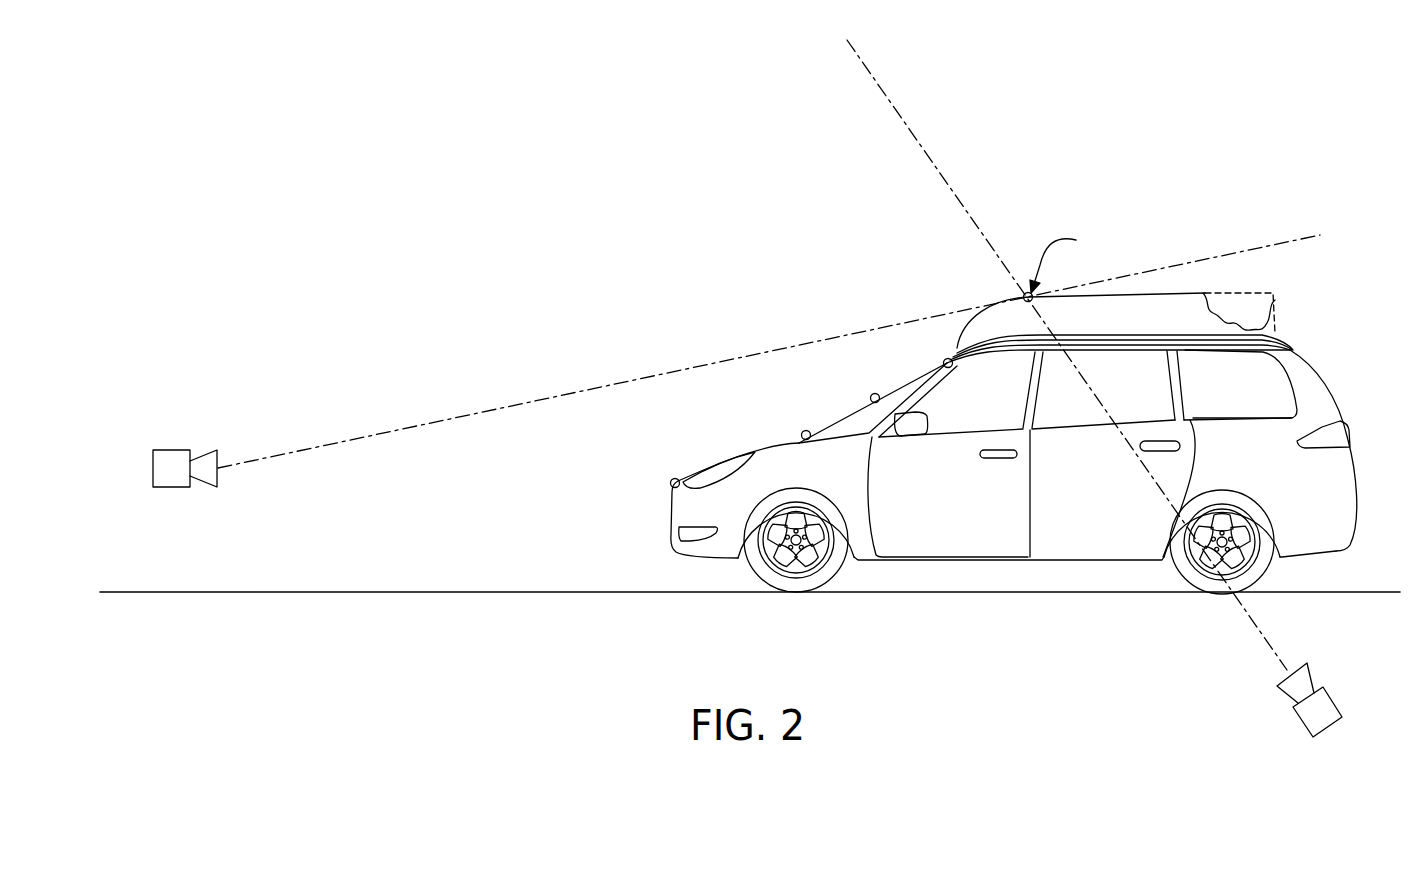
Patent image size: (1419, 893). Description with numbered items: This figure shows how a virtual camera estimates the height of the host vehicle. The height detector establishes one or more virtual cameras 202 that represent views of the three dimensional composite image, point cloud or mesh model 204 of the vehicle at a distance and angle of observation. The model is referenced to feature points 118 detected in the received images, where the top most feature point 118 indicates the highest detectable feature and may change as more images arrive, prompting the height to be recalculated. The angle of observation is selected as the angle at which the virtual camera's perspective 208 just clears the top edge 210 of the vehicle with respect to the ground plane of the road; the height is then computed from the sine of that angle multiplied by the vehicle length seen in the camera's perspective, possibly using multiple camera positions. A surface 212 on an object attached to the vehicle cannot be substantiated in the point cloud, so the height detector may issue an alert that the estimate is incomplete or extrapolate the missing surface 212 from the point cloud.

The feature points 118 is at (670, 484).
The virtual cameras 202 is at (172, 450).
The three dimensional composite image/point cloud/mesh model 204 is at (1333, 386).
The virtual camera's perspective 208 is at (683, 370).
The top edge 210 is at (1074, 260).
The missing surface 212 is at (1262, 306).